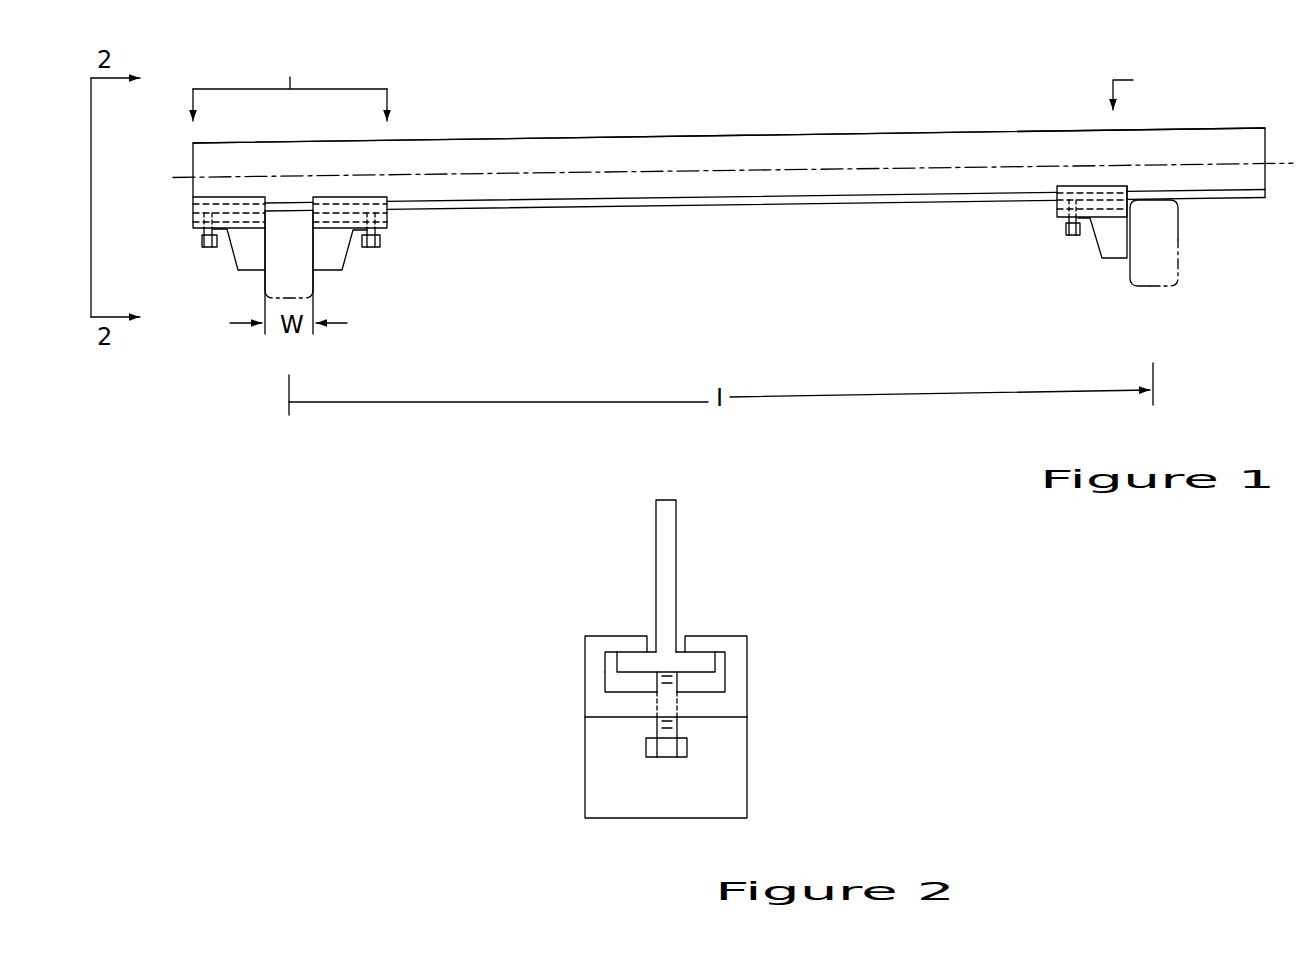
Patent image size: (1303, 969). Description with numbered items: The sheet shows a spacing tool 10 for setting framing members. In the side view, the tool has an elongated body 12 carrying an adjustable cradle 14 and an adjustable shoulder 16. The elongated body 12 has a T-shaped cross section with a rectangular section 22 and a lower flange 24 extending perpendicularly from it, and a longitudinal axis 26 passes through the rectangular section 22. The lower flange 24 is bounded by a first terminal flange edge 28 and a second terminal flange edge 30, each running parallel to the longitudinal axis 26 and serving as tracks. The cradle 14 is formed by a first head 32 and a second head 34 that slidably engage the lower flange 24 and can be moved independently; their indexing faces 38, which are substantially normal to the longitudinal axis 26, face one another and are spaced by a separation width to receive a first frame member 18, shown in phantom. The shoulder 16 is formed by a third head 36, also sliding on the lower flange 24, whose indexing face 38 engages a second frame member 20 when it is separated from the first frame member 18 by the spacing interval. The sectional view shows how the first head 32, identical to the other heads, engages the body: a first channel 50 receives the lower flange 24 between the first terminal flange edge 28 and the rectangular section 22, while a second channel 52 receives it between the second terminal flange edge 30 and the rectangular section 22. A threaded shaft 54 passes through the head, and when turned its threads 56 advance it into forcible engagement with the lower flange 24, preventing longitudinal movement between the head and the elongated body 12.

In FIG. 1, the spacing tool 10 is at (888, 89).
In FIG. 2, the spacing tool 10 is at (505, 573).
In FIG. 1, the elongated body 12 is at (700, 131).
In FIG. 2, the elongated body 12 is at (766, 560).
In FIG. 1, the adjustable cradle 14 is at (290, 83).
In FIG. 1, the adjustable shoulder 16 is at (1141, 86).
In FIG. 1, the first frame member 18 is at (308, 284).
In FIG. 1, the second frame member 20 is at (1179, 249).
In FIG. 1, the rectangular section 22 is at (935, 137).
In FIG. 2, the rectangular section 22 is at (674, 533).
In FIG. 1, the lower flange 24 is at (742, 207).
In FIG. 2, the lower flange 24 is at (714, 648).
In FIG. 1, the longitudinal axis 26 is at (1231, 159).
In FIG. 2, the first terminal flange edge 28 is at (719, 660).
In FIG. 2, the second terminal flange edge 30 is at (614, 663).
In FIG. 1, the first head 32 is at (240, 253).
In FIG. 2, the first head 32 is at (822, 799).
In FIG. 1, the second head 34 is at (340, 243).
In FIG. 1, the third head 36 is at (1097, 252).
In FIG. 1, the indexing faces 38 is at (313, 255).
In FIG. 2, the first channel 50 is at (719, 681).
In FIG. 2, the second channel 52 is at (614, 686).
In FIG. 1, the threaded shaft 54 is at (203, 242).
In FIG. 2, the threaded shaft 54 is at (686, 726).
In FIG. 2, the threads 56 is at (662, 721).